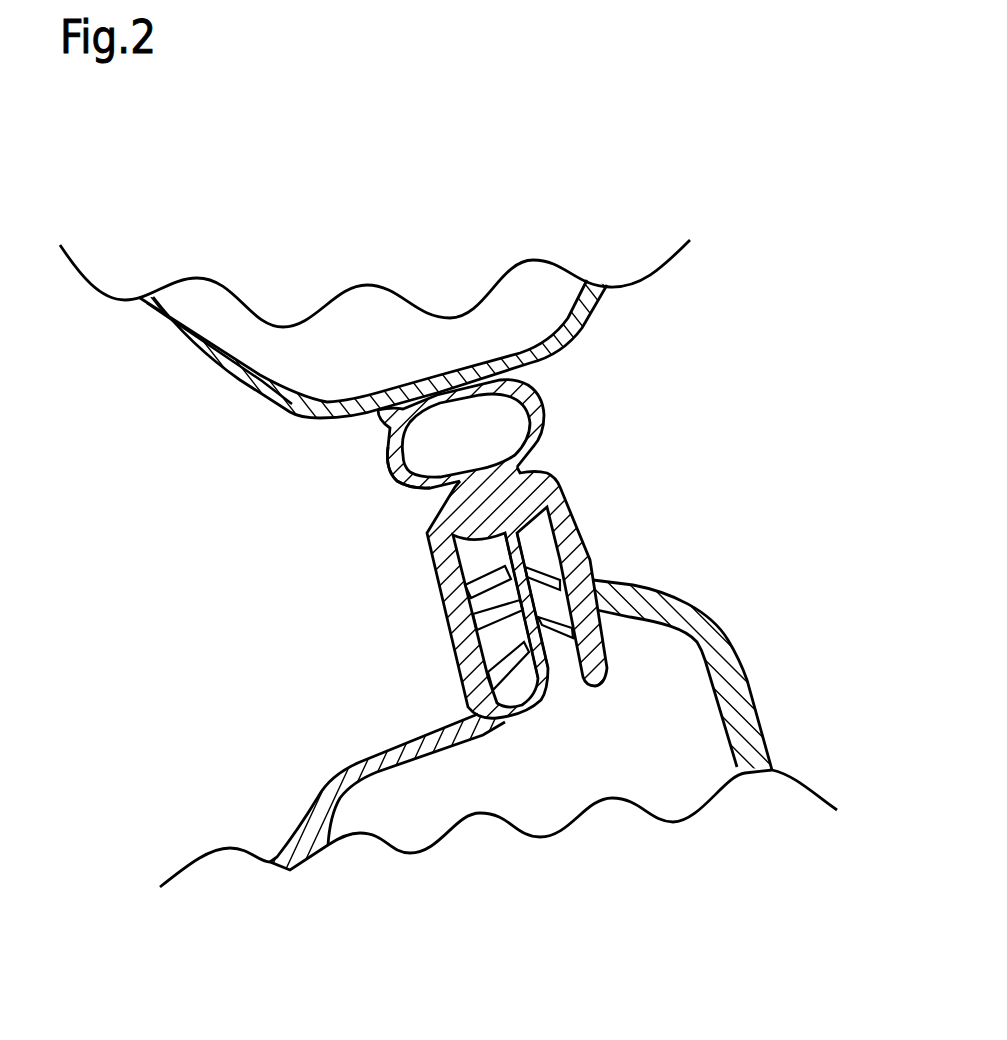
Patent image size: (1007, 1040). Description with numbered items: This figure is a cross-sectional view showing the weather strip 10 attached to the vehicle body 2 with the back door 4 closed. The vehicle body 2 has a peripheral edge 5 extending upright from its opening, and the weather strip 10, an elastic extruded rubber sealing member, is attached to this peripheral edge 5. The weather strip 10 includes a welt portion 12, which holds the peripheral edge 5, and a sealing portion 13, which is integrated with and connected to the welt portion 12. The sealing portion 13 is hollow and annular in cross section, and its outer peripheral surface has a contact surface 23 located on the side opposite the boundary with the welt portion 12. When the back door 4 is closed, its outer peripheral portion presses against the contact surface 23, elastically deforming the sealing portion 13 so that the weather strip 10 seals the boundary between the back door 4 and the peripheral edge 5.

The vehicle body 2 is at (327, 777).
The back door 4 is at (227, 373).
The peripheral edge 5 is at (548, 688).
The weather strip 10 is at (573, 427).
The welt portion 12 is at (440, 592).
The sealing portion 13 is at (392, 479).
The contact surface 23 is at (417, 378).